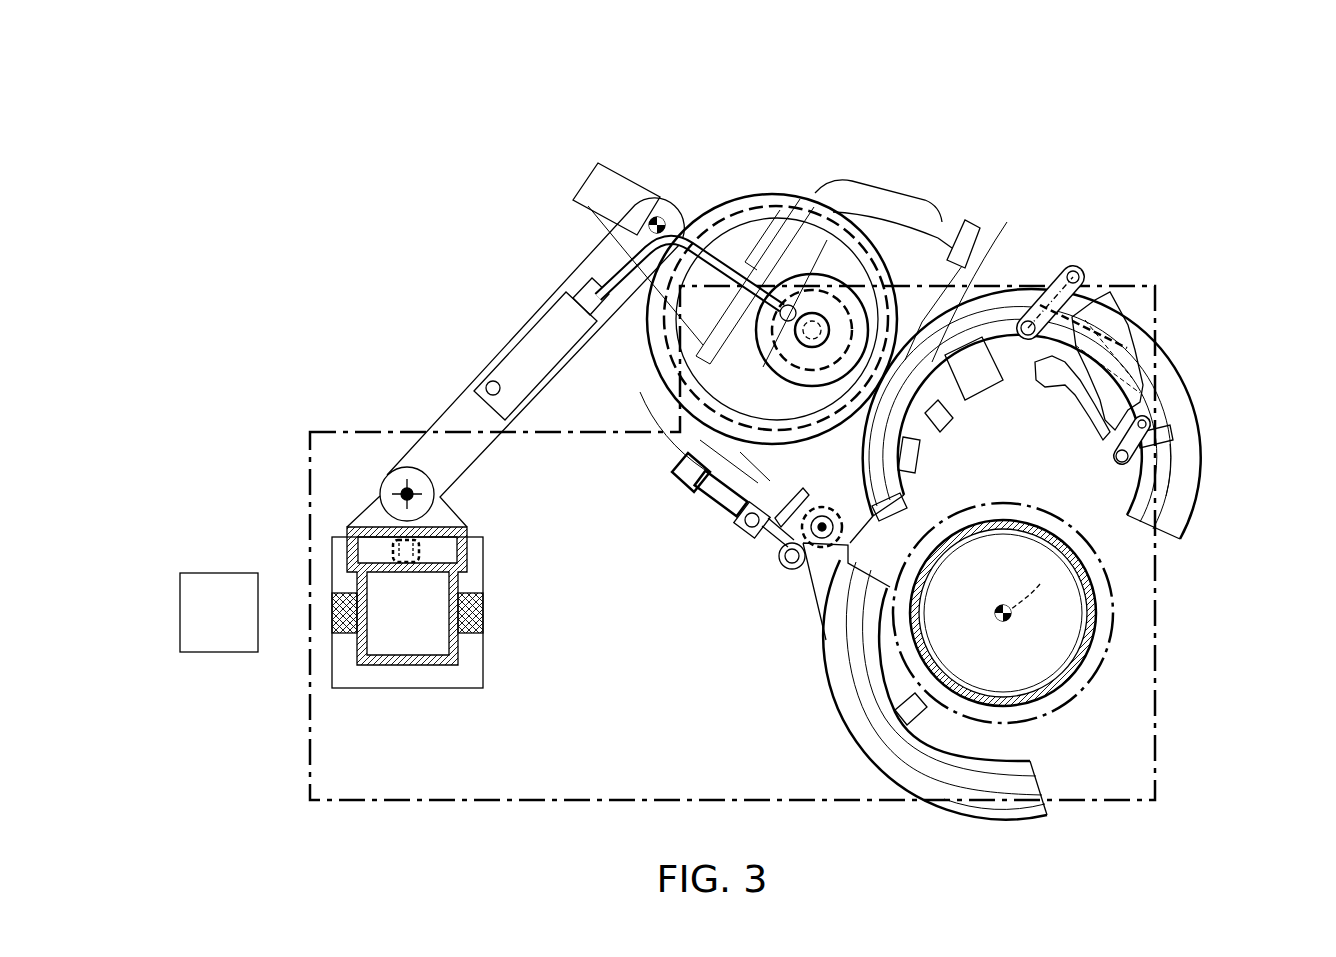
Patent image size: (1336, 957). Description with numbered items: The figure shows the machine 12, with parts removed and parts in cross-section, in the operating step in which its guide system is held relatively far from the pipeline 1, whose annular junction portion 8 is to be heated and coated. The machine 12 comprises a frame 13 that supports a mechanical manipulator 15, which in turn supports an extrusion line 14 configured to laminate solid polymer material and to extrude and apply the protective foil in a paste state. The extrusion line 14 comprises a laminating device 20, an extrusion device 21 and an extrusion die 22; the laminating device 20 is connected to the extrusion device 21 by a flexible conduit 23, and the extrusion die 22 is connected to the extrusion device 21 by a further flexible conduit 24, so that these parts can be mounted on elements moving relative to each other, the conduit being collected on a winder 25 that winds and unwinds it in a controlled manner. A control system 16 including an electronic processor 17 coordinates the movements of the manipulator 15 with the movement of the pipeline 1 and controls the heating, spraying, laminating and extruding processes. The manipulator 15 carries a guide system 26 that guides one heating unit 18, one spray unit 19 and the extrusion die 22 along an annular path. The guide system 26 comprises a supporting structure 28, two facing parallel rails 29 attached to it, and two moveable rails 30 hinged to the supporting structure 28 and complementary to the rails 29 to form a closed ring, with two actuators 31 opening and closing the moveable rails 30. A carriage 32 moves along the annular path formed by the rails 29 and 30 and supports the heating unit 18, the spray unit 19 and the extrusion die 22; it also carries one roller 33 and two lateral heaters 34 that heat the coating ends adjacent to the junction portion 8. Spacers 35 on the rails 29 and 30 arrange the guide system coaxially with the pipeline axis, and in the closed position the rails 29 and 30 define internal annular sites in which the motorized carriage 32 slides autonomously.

The pipeline 1 is at (1097, 672).
The annular junction portion 8 is at (1107, 620).
The machine 12 is at (1034, 134).
The frame 13 is at (460, 670).
The extrusion line 14 is at (718, 168).
The mechanical manipulator 15 is at (469, 261).
The control system 16 is at (281, 416).
The electronic processor 17 is at (218, 595).
The heating unit 18 is at (920, 456).
The spray unit 19 is at (975, 377).
The laminating device 20 is at (520, 362).
The extrusion device 21 is at (760, 352).
The extrusion die 22 is at (1120, 386).
The flexible conduit 23 is at (607, 273).
The further flexible conduit 24 is at (997, 300).
The winder 25 is at (800, 172).
The guide system 26 is at (1222, 534).
The supporting structure 28 is at (955, 205).
The rails 29 is at (1193, 450).
The moveable rails 30 is at (885, 762).
The actuators 31 is at (716, 500).
The carriage 32 is at (930, 362).
The roller 33 is at (1125, 462).
The lateral heaters 34 is at (1072, 385).
The spacers 35 is at (937, 418).